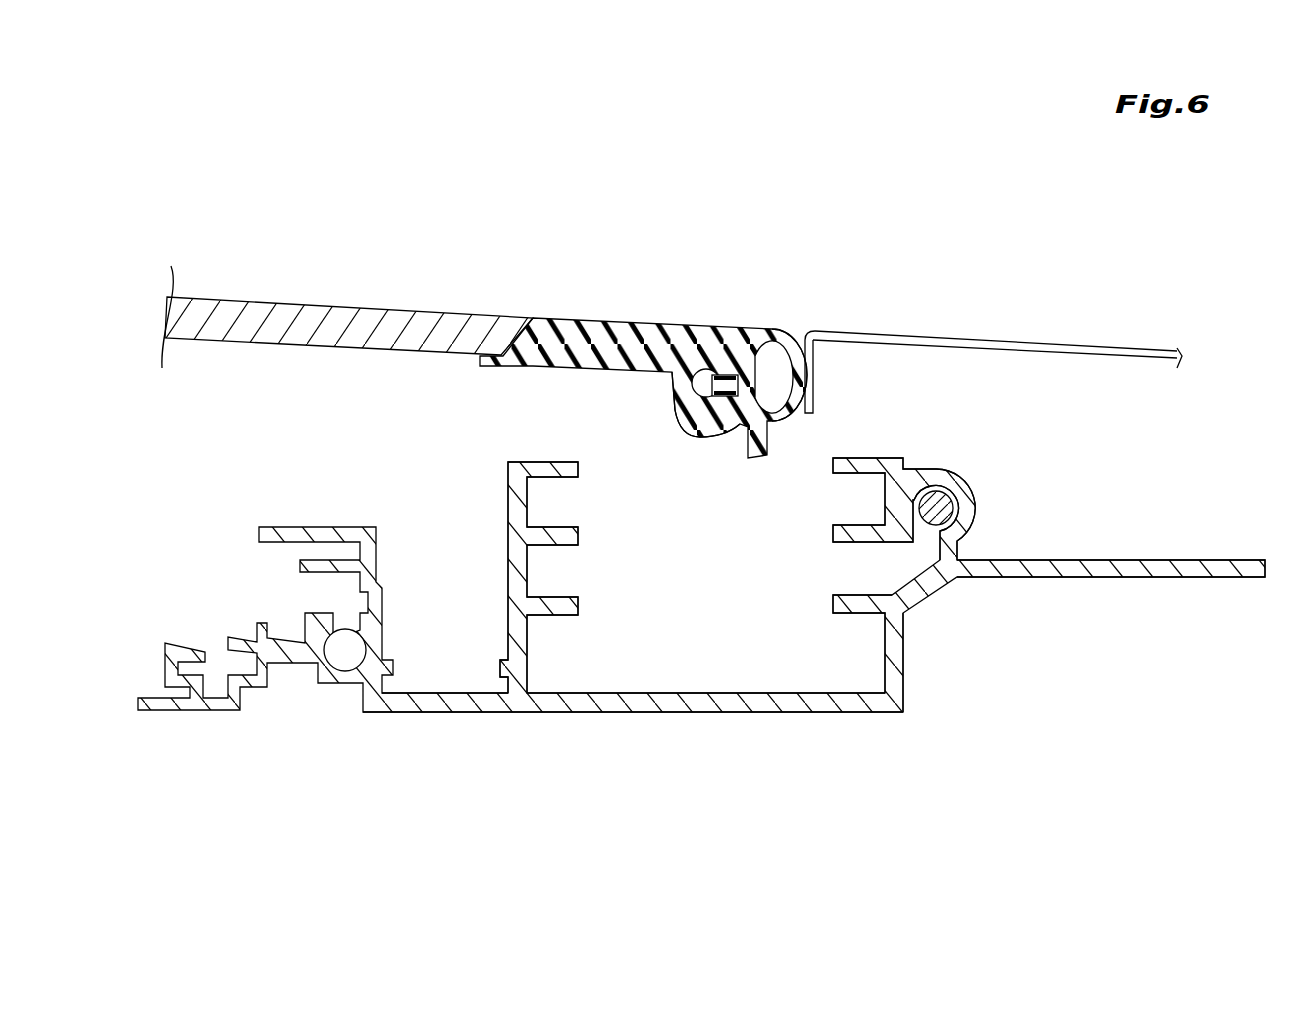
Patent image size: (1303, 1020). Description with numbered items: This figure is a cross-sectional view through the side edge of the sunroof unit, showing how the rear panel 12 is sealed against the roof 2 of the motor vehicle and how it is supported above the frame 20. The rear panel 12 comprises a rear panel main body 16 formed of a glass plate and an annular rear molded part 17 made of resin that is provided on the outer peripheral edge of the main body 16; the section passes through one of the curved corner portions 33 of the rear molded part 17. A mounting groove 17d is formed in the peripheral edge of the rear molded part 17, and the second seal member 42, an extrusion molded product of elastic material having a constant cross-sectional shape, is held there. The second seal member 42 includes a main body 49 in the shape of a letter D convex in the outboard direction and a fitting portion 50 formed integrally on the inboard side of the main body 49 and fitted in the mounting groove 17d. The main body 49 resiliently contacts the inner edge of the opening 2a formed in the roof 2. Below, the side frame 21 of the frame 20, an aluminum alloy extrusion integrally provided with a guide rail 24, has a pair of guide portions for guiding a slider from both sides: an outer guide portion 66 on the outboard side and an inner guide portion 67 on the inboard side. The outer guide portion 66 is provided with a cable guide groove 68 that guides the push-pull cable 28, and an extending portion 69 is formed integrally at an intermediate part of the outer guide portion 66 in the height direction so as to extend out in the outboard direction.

The roof 2 is at (993, 328).
The opening 2a is at (808, 336).
The rear panel 12 is at (347, 297).
The rear panel main body 16 is at (333, 305).
The rear molded part 17 is at (644, 370).
The mounting groove 17d is at (703, 433).
The frame 20 is at (701, 598).
The side frame 21 is at (468, 713).
The guide rail 24 is at (683, 713).
The push-pull cable 28 is at (939, 479).
The curved corner portion 33 is at (617, 317).
The second seal member 42 is at (772, 342).
The main body 49 is at (778, 332).
The fitting portion 50 is at (692, 372).
The outer guide portion 66 is at (892, 650).
The inner guide portion 67 is at (527, 652).
The cable guide groove 68 is at (953, 493).
The extending portion 69 is at (1100, 560).